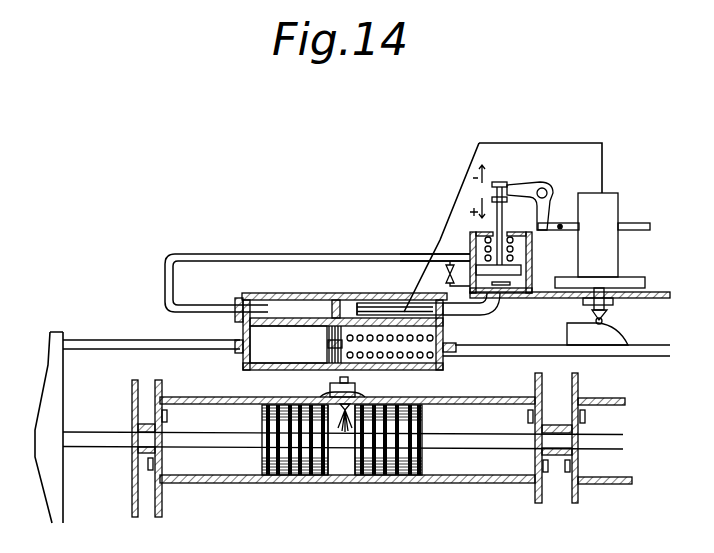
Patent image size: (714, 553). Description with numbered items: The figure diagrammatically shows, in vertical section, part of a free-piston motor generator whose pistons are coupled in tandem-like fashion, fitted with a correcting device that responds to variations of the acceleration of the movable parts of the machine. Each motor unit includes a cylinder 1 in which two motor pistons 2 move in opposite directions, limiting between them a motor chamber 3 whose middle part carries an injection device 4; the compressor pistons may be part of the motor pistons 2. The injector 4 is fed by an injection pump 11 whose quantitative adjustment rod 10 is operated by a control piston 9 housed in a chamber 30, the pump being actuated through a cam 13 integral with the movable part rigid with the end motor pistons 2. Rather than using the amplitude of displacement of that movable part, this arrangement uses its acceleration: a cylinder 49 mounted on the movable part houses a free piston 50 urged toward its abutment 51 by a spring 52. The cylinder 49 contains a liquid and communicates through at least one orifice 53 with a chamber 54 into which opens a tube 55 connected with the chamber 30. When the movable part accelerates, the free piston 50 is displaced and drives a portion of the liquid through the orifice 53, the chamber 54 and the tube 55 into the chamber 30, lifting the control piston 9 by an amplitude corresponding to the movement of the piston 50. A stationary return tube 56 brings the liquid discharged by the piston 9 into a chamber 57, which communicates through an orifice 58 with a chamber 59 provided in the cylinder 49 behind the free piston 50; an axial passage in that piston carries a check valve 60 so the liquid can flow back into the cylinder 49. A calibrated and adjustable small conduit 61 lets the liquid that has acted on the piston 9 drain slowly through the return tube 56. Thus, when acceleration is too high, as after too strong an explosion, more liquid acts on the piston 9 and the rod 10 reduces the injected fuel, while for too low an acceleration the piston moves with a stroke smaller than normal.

The cylinder 1 is at (613, 485).
The motor pistons 2 is at (400, 455).
The motor chamber 3 is at (342, 457).
The injection device 4 is at (327, 413).
The control piston 9 is at (525, 267).
The quantitative adjustment rod 10 is at (572, 223).
The injection pump 11 is at (608, 217).
The cam 13 is at (605, 335).
The chamber 30 is at (517, 283).
The cylinder 49 is at (425, 375).
The free piston 50 is at (327, 347).
The abutment 51 is at (325, 296).
The spring 52 is at (358, 335).
The orifice 53 is at (383, 360).
The chamber 54 is at (360, 338).
The tube 55 is at (403, 310).
The stationary return tube 56 is at (193, 254).
The chamber 57 is at (259, 293).
The orifice 58 is at (287, 323).
The chamber 59 is at (262, 348).
The check valve 60 is at (348, 406).
The calibrated and adjustable small conduit 61 is at (462, 285).